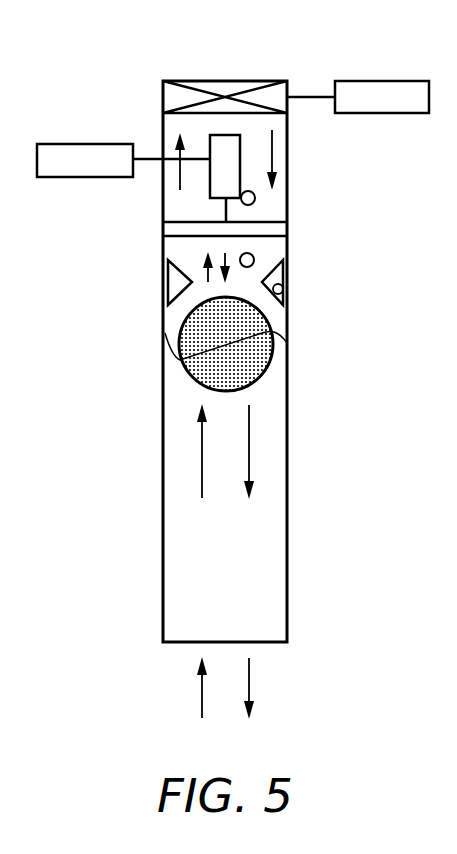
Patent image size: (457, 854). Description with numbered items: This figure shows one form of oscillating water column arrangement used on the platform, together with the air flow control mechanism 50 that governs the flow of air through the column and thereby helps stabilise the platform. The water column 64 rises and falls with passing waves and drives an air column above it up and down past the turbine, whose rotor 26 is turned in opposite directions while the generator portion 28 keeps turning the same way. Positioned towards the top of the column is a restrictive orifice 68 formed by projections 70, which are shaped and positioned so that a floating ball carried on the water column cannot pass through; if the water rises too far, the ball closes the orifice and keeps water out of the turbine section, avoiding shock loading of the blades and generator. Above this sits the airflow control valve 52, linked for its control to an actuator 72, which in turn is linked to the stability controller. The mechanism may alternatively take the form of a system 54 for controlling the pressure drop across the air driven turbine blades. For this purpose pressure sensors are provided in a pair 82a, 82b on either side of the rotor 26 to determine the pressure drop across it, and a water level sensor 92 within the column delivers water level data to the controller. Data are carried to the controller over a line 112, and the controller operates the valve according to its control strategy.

The air flow control mechanism 50 is at (260, 70).
The airflow control valve 52 is at (227, 88).
The system for controlling the pressure drop across the air driven turbine blades 54 is at (128, 128).
The actuator 72 is at (384, 87).
The line 112 is at (53, 145).
The generator portion 28 is at (240, 152).
The pressure sensor 82a is at (255, 198).
The rotor 26 is at (180, 227).
The pressure sensor 82b is at (254, 260).
The projections 70 is at (176, 283).
The water level sensor 92 is at (283, 289).
The restrictive orifice 68 is at (199, 283).
The water column 64 is at (180, 461).